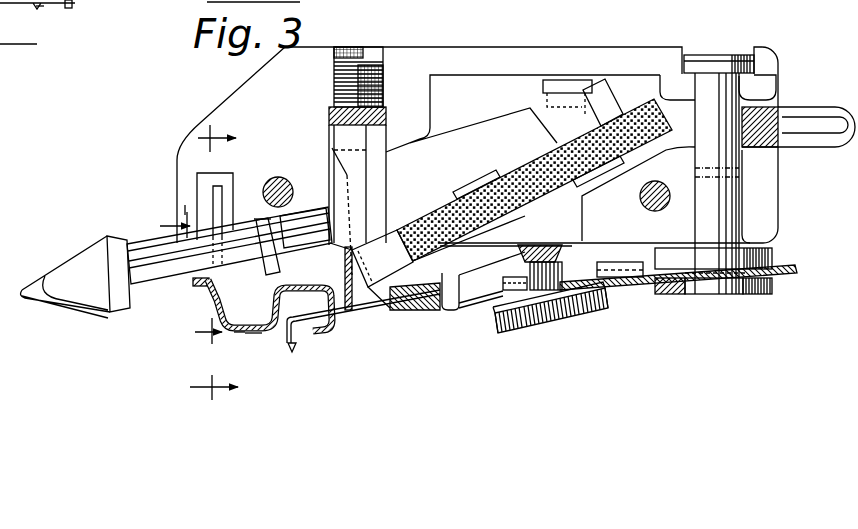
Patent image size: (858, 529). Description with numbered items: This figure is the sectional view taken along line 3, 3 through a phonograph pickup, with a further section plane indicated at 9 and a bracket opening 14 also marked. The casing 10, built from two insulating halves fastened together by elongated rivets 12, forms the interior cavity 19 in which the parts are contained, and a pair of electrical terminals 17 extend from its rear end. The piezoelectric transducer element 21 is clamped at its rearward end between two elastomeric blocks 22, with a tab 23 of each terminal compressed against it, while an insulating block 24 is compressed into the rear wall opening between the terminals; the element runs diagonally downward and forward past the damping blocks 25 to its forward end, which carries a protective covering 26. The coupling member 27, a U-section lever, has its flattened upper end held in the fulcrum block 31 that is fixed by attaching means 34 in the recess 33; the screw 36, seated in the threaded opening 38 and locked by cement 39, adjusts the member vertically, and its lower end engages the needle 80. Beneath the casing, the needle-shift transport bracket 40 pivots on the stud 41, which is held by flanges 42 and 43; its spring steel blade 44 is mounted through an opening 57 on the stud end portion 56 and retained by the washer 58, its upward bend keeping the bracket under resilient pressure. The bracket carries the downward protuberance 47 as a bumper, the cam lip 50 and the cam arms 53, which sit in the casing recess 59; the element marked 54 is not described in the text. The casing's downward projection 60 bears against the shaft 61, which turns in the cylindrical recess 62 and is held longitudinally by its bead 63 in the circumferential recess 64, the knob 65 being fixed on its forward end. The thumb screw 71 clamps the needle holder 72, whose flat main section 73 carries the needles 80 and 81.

The section line 3 is at (26, 50).
The section line 9 is at (181, 278).
The casing 10 is at (531, 52).
The elongated rivets 12 is at (293, 190).
The opening 14 is at (166, 410).
The electrical terminals 17 is at (810, 107).
The interior cavity 19 is at (468, 92).
The piezoelectric transducer element 21 is at (640, 100).
The mounting blocks 22 is at (610, 103).
The tab 23 is at (594, 96).
The block of elastomeric insulating material 24 is at (783, 148).
The damping block 25 is at (478, 188).
The protective covering 26 is at (388, 231).
The coupling member 27 is at (333, 178).
The supporting and fulcrum block 31 is at (374, 147).
The recess 33 is at (386, 122).
The attaching means 34 is at (386, 145).
The screw 36 is at (383, 77).
The threaded opening 38 is at (349, 47).
The cement 39 is at (383, 60).
The needle-shift transport bracket 40 is at (255, 338).
The stud 41 is at (727, 205).
The flange 42 is at (714, 62).
The flange 43 is at (772, 250).
The spring steel blade 44 is at (787, 276).
The downward protuberance 47 is at (318, 322).
The lip 50 is at (203, 283).
The upwardly projecting arms 53 is at (213, 199).
The spring arm 54 is at (263, 332).
The end portion of stud 56 is at (709, 276).
The opening 57 is at (687, 283).
The washer 58 is at (764, 288).
The recess 59 is at (176, 195).
The downward projection 60 is at (185, 208).
The shaft 61 is at (173, 283).
The cylindrical recess 62 is at (240, 322).
The circumferential bead or flange 63 is at (263, 222).
The circumferential recess 64 is at (273, 220).
The handle or knob 65 is at (63, 268).
The thumb screw 71 is at (556, 313).
The needle holder 72 is at (635, 283).
The flat main section 73 is at (483, 309).
The needle 80 is at (360, 352).
The needle 81 is at (40, 8).